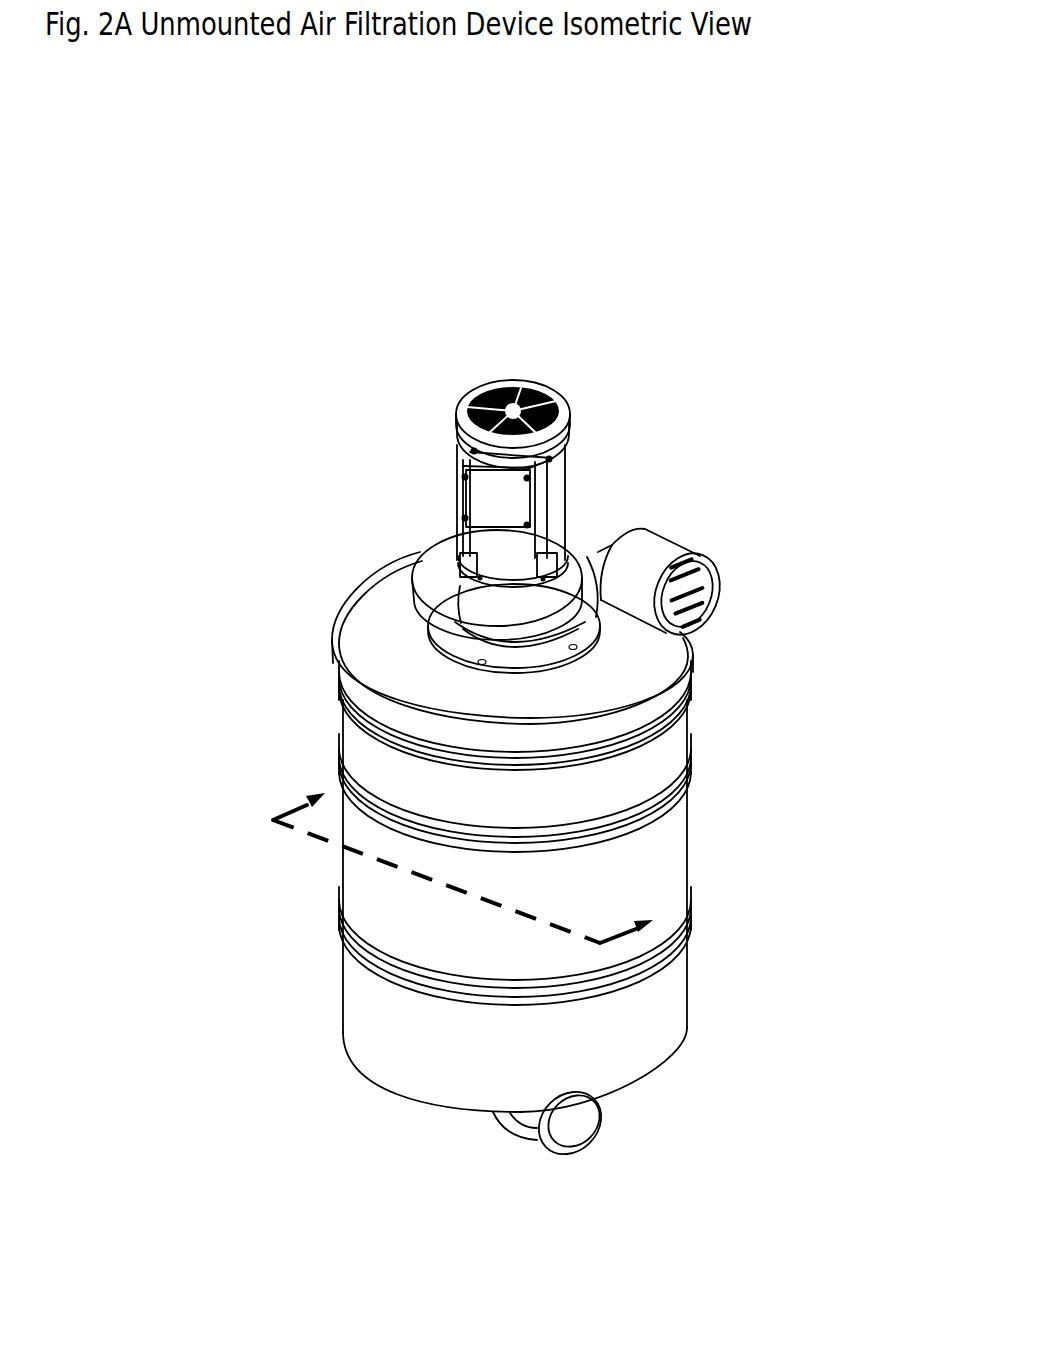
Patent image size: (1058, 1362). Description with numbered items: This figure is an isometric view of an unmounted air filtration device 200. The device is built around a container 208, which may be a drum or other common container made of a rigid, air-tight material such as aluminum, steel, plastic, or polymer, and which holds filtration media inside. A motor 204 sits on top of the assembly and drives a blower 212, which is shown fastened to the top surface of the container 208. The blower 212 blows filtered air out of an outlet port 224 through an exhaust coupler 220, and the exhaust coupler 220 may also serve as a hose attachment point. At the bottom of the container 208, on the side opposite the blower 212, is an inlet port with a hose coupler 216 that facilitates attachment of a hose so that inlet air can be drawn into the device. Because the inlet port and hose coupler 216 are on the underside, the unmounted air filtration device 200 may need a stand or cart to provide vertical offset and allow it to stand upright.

The unmounted air filtration device 200 is at (893, 90).
The motor 204 is at (455, 405).
The container 208 is at (370, 1027).
The blower 212 is at (447, 593).
The hose coupler 216 is at (563, 1130).
The exhaust coupler 220 is at (650, 555).
The outlet port 224 is at (690, 617).